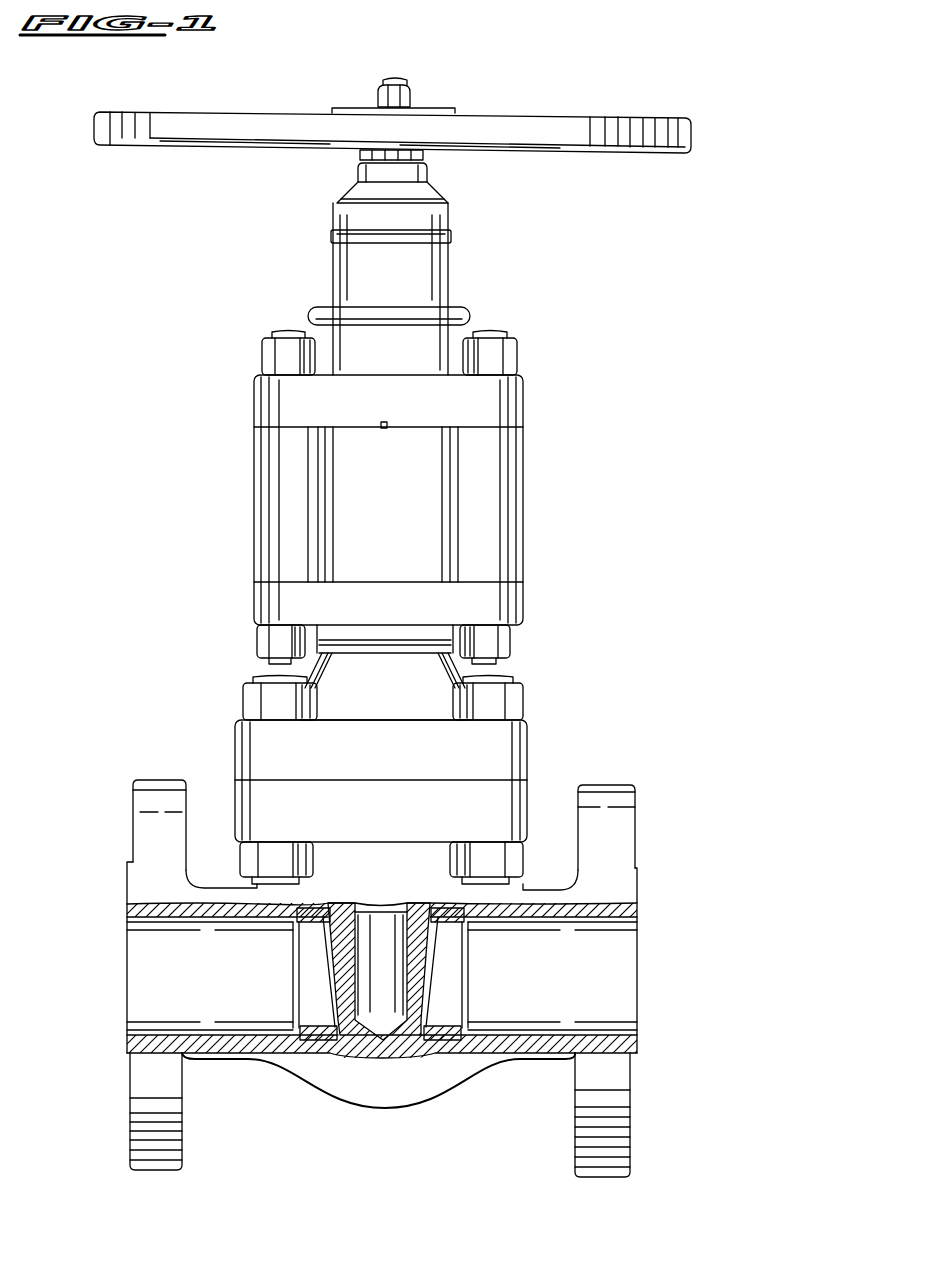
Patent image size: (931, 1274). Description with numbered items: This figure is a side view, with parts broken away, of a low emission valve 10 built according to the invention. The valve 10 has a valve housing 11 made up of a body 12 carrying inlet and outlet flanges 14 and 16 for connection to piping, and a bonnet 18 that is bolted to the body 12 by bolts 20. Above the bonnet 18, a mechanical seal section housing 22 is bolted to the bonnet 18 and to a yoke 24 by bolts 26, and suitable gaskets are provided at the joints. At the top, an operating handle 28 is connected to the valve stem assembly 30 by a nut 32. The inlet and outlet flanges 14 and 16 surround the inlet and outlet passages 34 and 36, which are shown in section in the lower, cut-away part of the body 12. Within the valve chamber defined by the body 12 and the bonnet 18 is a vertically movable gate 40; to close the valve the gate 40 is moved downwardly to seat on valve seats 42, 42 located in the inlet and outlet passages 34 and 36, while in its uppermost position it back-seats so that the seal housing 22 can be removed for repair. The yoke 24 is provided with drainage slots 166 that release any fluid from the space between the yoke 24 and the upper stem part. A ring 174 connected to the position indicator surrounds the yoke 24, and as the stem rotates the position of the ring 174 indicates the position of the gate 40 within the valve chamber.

The low emission valve 10 is at (614, 732).
The valve housing 11 is at (536, 801).
The body 12 is at (527, 1064).
The inlet flange 14 is at (619, 819).
The outlet flange 16 is at (133, 803).
The bonnet 18 is at (443, 683).
The bolts 20 is at (258, 704).
The mechanical seal section housing 22 is at (501, 532).
The yoke 24 is at (433, 286).
The bolts 26 is at (268, 358).
The operating handle 28 is at (574, 128).
The valve stem assembly 30 is at (364, 153).
The nut 32 is at (410, 98).
The inlet passage 34 is at (621, 1037).
The outlet passage 36 is at (130, 1023).
The gate 40 is at (393, 1046).
The valve seats 42 is at (312, 928).
The drainage slots 166 is at (387, 425).
The ring 174 is at (470, 317).